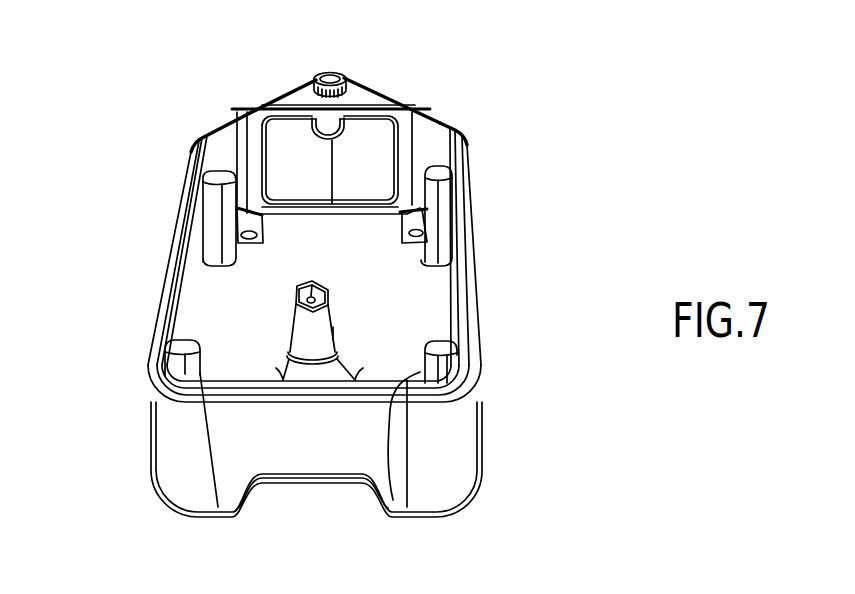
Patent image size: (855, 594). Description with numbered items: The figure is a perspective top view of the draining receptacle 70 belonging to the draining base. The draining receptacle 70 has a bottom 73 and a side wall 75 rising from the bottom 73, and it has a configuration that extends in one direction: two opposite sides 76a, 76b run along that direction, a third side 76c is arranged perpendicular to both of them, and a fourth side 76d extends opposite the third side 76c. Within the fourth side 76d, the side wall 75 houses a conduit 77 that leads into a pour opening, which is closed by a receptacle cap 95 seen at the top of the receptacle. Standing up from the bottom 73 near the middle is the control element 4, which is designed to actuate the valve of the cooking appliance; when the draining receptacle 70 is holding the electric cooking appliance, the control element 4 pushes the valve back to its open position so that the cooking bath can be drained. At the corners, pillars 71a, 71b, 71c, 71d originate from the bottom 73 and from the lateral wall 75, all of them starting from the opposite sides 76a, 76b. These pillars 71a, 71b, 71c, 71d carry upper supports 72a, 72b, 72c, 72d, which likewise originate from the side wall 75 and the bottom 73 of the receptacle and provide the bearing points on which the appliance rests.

The draining receptacle 70 is at (515, 203).
The pillar 71a is at (422, 192).
The pillar 71b is at (391, 504).
The pillar 71c is at (214, 376).
The pillar 71d is at (228, 148).
The upper support 72a is at (440, 166).
The upper support 72b is at (443, 344).
The upper support 72c is at (187, 350).
The upper support 72d is at (228, 129).
The bottom 73 is at (406, 298).
The side wall 75 is at (193, 254).
The side 76a is at (481, 323).
The side 76b is at (161, 297).
The third side 76c is at (307, 437).
The fourth side 76d is at (381, 90).
The conduit 77 is at (306, 133).
The receptacle cap 95 is at (333, 72).
The control element 4 is at (297, 284).